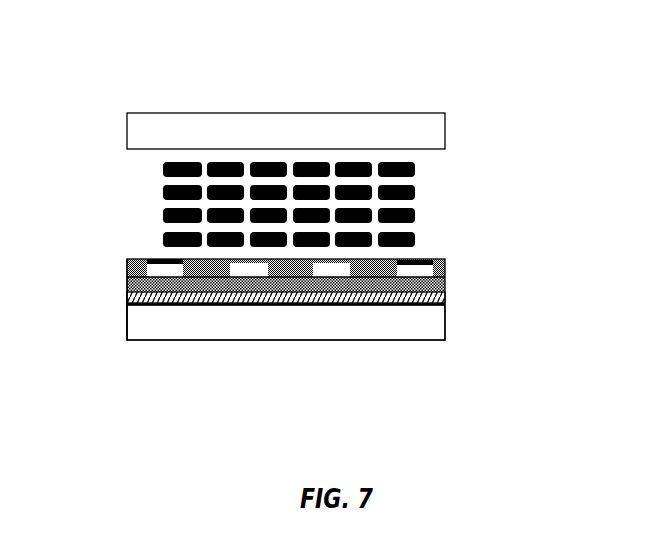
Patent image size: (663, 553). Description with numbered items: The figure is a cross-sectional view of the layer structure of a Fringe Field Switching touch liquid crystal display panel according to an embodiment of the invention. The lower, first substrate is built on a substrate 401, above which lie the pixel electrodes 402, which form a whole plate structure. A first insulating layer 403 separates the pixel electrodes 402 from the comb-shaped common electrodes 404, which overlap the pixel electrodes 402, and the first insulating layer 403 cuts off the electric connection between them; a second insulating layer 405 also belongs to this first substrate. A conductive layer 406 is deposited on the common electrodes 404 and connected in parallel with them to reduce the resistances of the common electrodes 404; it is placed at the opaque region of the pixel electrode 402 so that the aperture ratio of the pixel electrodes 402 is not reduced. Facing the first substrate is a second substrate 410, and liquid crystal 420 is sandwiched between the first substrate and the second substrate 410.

The substrate 401 is at (383, 322).
The pixel electrodes 402 is at (415, 302).
The first insulating layer 403 is at (427, 290).
The common electrodes 404 is at (416, 274).
The second insulating layer 405 is at (128, 262).
The conductive layer 406 is at (172, 258).
The second substrate 410 is at (397, 125).
The liquid crystal 420 is at (417, 193).